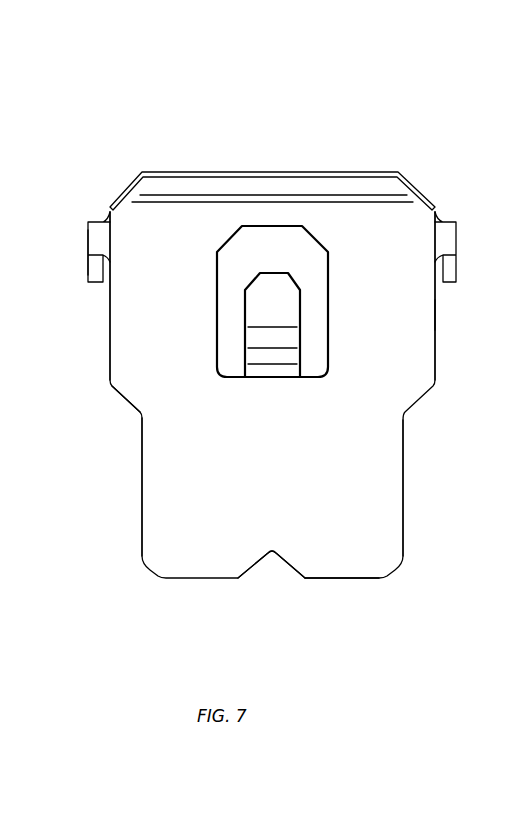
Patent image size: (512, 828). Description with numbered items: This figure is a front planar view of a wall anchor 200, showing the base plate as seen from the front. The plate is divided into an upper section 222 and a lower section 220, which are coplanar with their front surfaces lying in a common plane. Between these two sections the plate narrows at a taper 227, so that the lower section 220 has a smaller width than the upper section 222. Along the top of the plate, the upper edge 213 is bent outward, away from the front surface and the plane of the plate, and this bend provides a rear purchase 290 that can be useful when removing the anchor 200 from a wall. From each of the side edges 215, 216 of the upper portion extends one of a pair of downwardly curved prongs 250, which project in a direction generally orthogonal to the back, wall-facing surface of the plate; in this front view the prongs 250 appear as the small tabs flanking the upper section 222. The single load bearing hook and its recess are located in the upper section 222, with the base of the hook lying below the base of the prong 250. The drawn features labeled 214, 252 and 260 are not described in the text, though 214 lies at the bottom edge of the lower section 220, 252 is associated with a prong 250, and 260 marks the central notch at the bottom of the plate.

The wall anchor 200 is at (303, 123).
The upper edge 213 is at (346, 172).
The bottom edge 214 is at (359, 579).
The side edge 215 is at (436, 312).
The side edge 216 is at (109, 312).
The lower section 220 is at (445, 410).
The upper section 222 is at (72, 180).
The taper 227 is at (127, 404).
The prong 250 is at (95, 235).
The tab edge 252 is at (1, 258).
The notch 260 is at (272, 558).
The rear purchase 290 is at (215, 170).